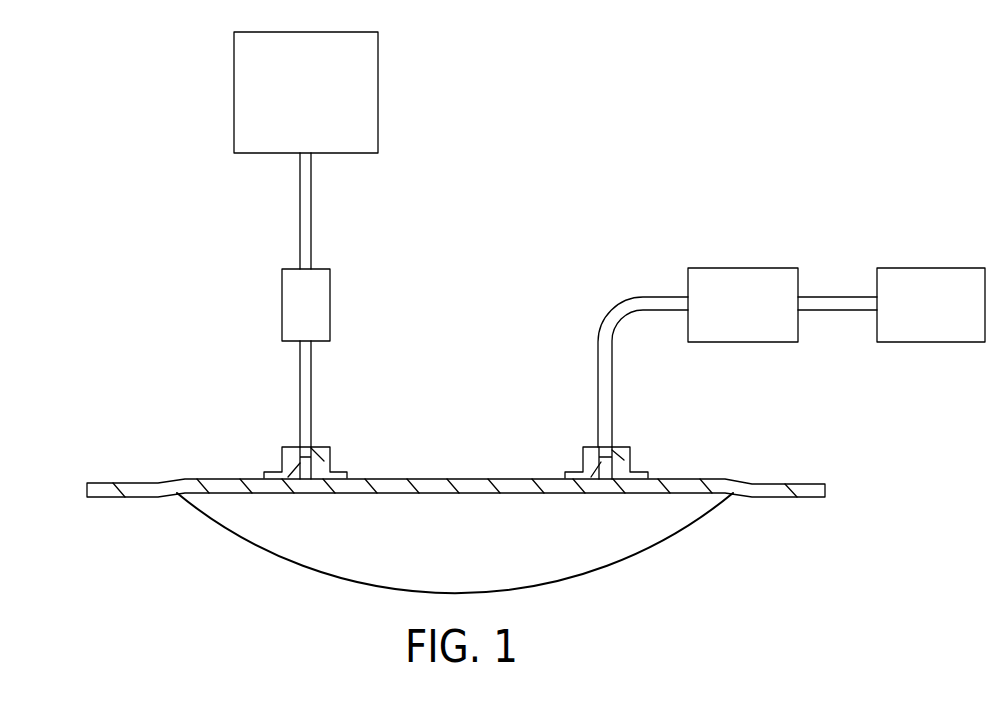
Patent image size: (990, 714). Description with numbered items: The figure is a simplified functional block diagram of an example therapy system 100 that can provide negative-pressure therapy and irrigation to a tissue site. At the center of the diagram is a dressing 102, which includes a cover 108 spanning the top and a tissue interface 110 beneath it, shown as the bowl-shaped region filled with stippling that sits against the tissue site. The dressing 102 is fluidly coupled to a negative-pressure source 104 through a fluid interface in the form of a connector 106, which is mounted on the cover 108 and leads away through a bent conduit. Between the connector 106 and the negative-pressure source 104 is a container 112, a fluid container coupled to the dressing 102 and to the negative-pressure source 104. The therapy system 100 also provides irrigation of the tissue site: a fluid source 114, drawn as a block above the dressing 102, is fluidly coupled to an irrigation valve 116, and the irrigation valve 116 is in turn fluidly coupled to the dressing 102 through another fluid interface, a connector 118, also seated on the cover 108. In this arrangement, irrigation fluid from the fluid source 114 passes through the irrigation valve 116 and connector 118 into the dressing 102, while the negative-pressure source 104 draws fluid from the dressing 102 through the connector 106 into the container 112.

The therapy system 100 is at (772, 168).
The dressing 102 is at (440, 410).
The negative-pressure source 104 is at (954, 322).
The connector 106 is at (632, 460).
The cover 108 is at (147, 483).
The tissue interface 110 is at (477, 558).
The container 112 is at (766, 322).
The fluid source 114 is at (328, 108).
The irrigation valve 116 is at (281, 305).
The connector 118 is at (282, 460).